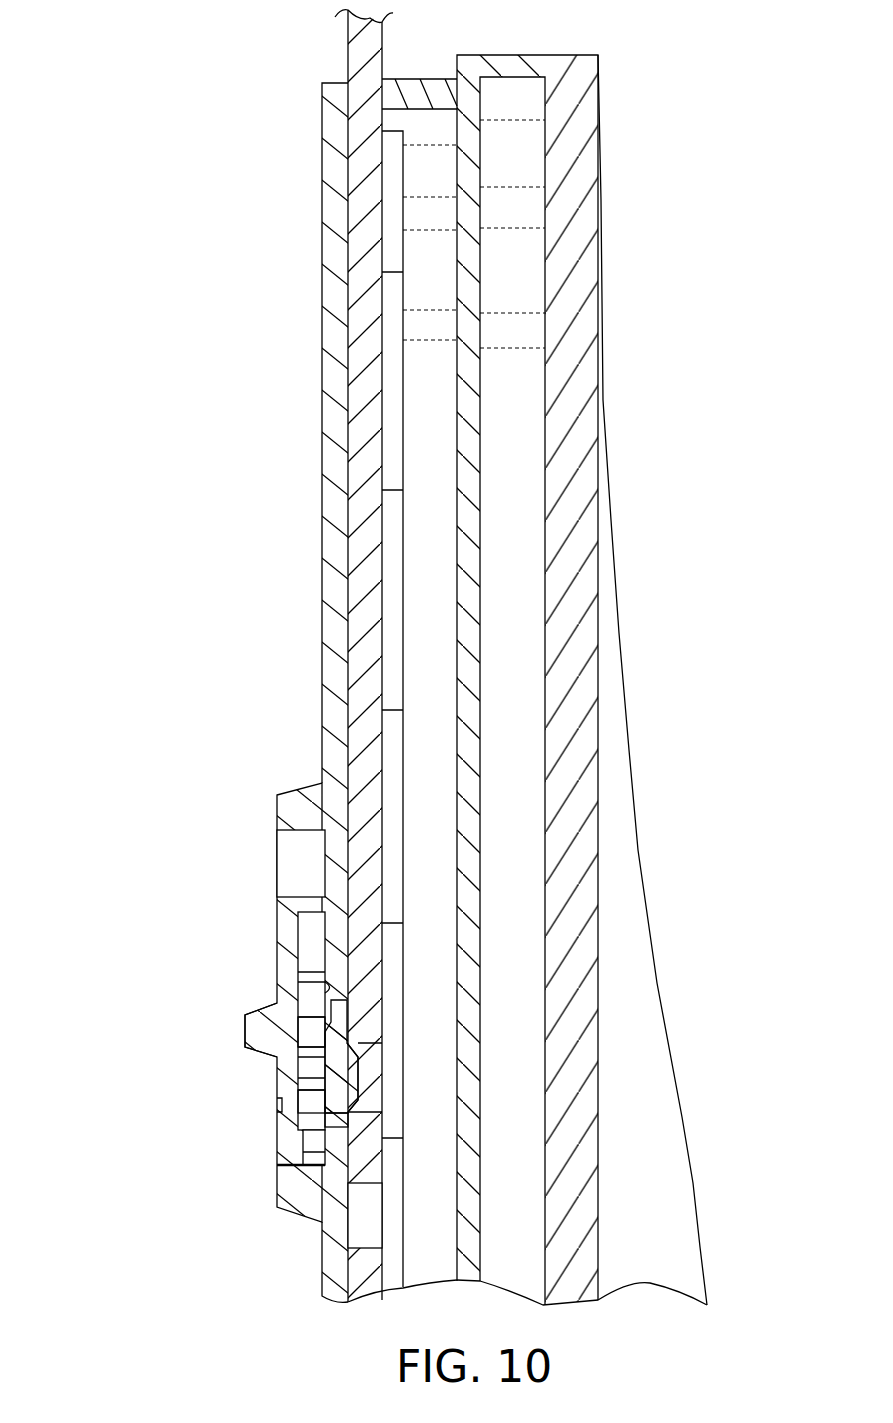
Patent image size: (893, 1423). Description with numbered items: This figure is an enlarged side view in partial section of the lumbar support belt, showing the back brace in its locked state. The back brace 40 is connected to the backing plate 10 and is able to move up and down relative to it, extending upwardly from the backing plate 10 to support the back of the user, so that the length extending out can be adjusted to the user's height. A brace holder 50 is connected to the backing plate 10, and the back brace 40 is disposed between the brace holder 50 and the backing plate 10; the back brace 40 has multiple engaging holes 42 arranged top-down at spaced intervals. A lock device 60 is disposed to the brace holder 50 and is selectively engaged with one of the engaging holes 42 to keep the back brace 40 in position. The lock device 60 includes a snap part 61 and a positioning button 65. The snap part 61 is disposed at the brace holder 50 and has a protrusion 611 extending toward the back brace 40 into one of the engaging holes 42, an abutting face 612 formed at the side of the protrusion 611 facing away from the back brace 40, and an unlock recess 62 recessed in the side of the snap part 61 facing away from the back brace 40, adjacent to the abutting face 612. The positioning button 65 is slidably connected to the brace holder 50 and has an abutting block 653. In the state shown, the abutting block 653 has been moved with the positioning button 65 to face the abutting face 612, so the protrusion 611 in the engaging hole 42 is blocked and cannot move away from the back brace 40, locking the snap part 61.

The backing plate 10 is at (628, 193).
The back brace 40 is at (384, 876).
The engaging holes 42 is at (363, 1183).
The brace holder 50 is at (306, 423).
The lock device 60 is at (146, 1019).
The snap part 61 is at (380, 1094).
The protrusion 611 is at (352, 1068).
The abutting face 612 is at (325, 1095).
The unlock recess 62 is at (327, 993).
The positioning button 65 is at (229, 1048).
The abutting block 653 is at (323, 1010).